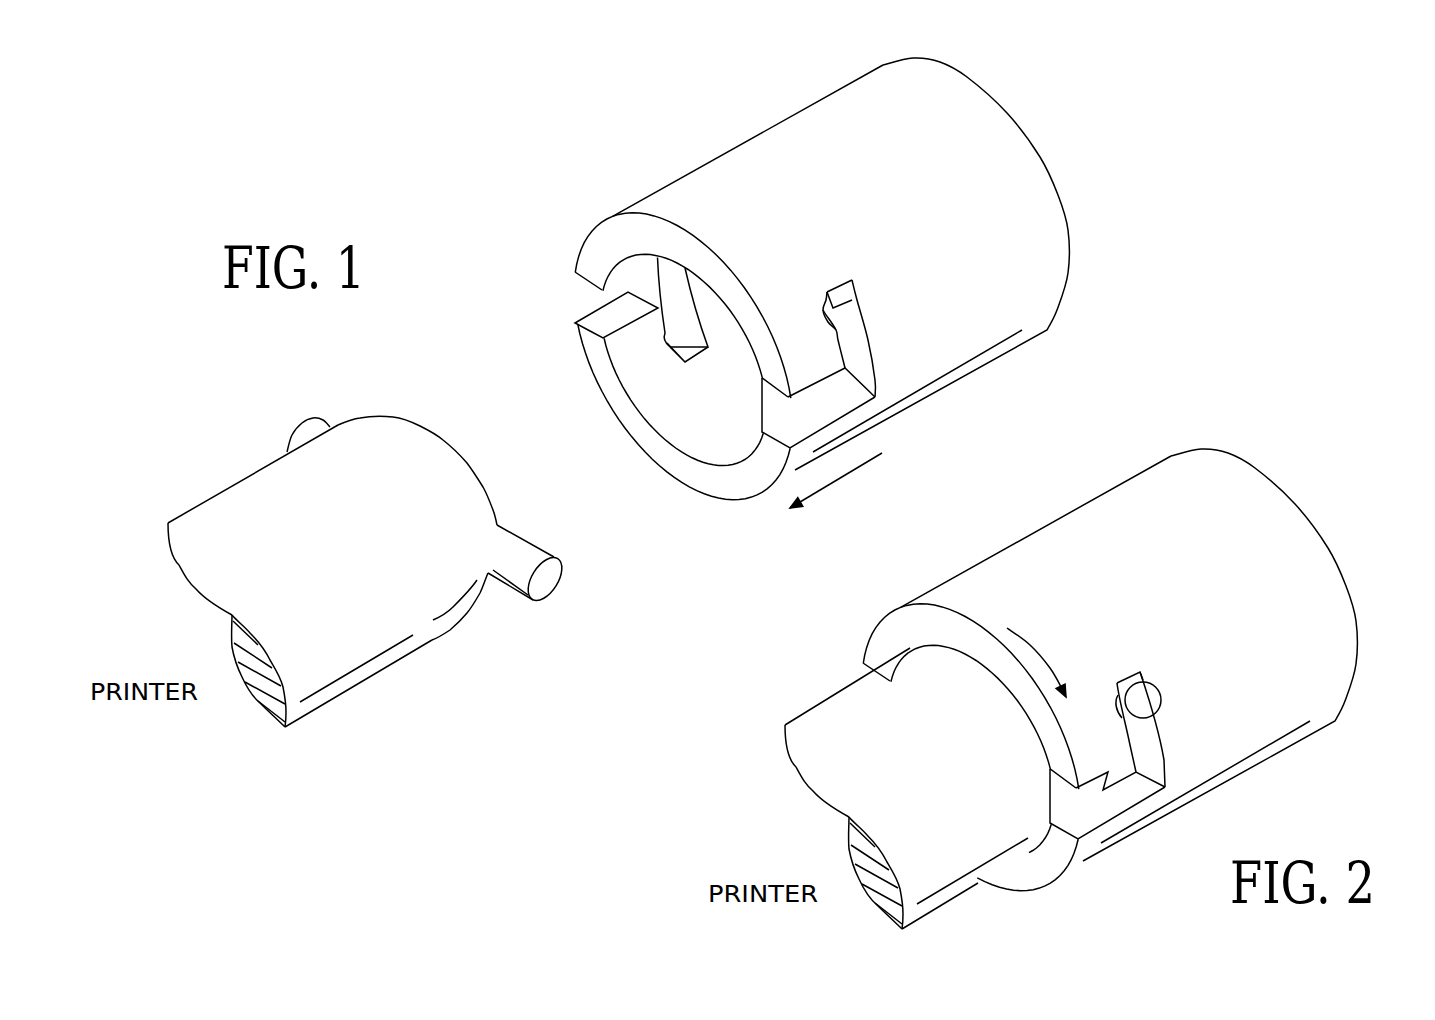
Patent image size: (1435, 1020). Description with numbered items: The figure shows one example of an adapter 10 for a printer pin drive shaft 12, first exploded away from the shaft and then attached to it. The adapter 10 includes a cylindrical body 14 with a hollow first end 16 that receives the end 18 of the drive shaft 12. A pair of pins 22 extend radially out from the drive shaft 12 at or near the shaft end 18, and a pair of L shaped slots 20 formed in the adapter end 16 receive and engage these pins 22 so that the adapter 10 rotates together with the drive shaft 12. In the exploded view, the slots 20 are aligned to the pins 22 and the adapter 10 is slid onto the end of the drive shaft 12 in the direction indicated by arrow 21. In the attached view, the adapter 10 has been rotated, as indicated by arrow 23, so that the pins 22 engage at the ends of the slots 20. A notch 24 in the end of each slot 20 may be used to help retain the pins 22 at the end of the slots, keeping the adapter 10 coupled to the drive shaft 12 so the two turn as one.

In FIG. 1, the adapter 10 is at (701, 131).
In FIG. 2, the adapter 10 is at (998, 529).
In FIG. 1, the printer pin drive shaft 12 is at (248, 493).
In FIG. 2, the printer pin drive shaft 12 is at (850, 708).
In FIG. 1, the cylindrical body 14 is at (810, 128).
In FIG. 2, the cylindrical body 14 is at (1101, 513).
In FIG. 1, the hollow first end 16 is at (596, 374).
In FIG. 2, the hollow first end 16 is at (1047, 860).
In FIG. 1, the end of drive shaft 18 is at (488, 483).
In FIG. 1, the L shaped slots 20 is at (588, 300).
In FIG. 2, the L shaped slots 20 is at (1149, 739).
In FIG. 1, the arrow 21 is at (838, 482).
In FIG. 1, the pins 22 is at (310, 433).
In FIG. 2, the pins 22 is at (1146, 698).
In FIG. 2, the arrow 23 is at (1040, 657).
In FIG. 1, the notch 24 is at (697, 352).
In FIG. 2, the notch 24 is at (1117, 707).